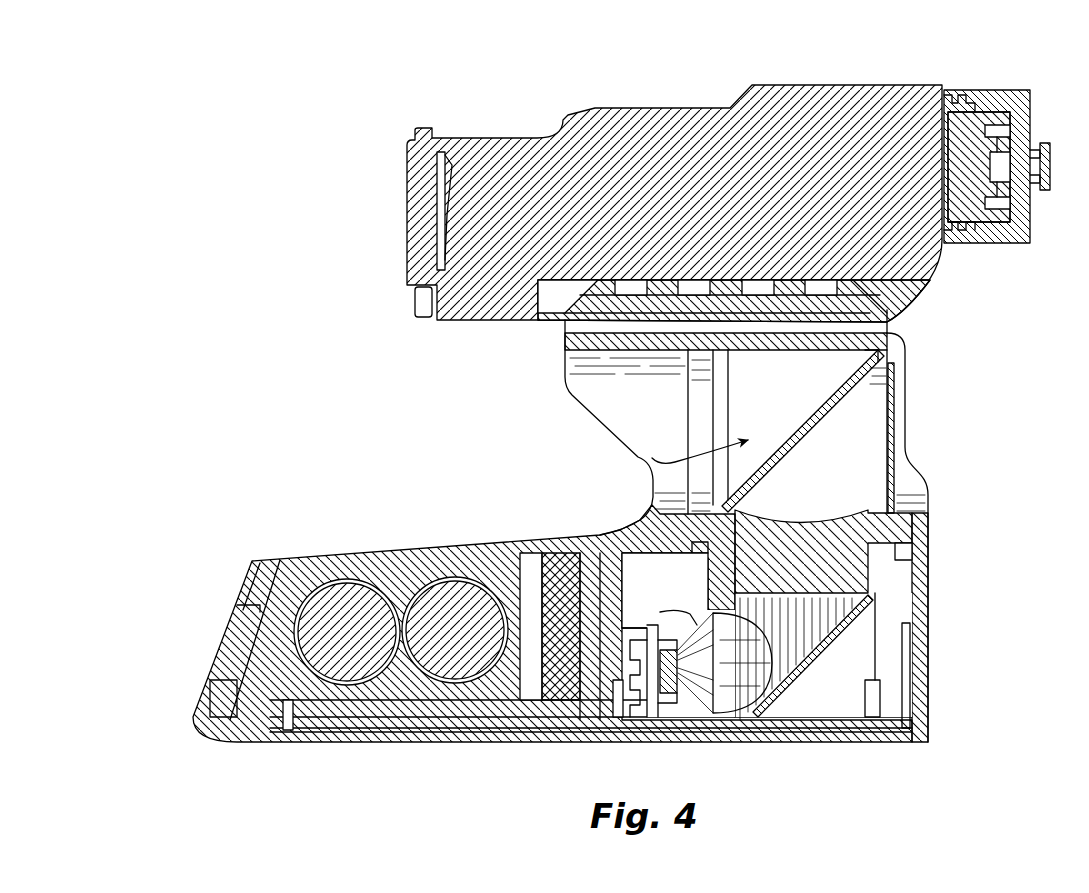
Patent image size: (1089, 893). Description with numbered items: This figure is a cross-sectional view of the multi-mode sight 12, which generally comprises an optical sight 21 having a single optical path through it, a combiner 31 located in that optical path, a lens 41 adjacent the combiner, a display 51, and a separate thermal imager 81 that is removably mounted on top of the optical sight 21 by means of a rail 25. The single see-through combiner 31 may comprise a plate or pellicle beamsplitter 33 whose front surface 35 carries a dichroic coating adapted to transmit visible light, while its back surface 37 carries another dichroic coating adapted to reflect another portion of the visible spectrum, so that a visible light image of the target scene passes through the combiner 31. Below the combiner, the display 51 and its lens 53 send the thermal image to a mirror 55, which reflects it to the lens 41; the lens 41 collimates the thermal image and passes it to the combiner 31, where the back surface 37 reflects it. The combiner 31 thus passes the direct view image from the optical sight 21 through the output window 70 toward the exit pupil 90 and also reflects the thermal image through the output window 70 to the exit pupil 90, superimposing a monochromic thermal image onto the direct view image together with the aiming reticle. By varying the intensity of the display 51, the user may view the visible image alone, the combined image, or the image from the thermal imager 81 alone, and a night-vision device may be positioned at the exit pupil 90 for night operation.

The multi-mode sight 12 is at (285, 126).
The thermal imager 81 is at (920, 85).
The rail 25 is at (880, 326).
The combiner 31 is at (640, 458).
The beamsplitter 33 is at (893, 390).
The front surface 35 is at (788, 437).
The back surface 37 is at (815, 418).
The output window 70 is at (893, 423).
The exit pupil 90 is at (1019, 432).
The optical sight 21 is at (352, 554).
The lens 41 is at (853, 557).
The display 51 is at (650, 745).
The lens 53 is at (677, 743).
The mirror 55 is at (827, 743).